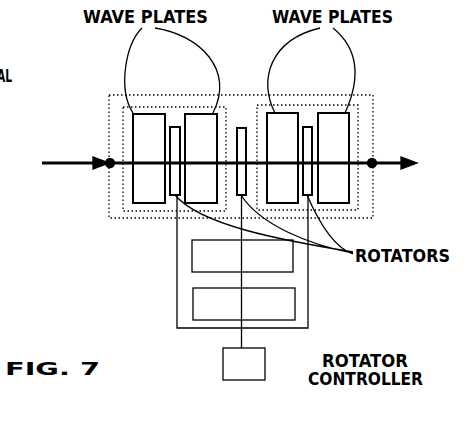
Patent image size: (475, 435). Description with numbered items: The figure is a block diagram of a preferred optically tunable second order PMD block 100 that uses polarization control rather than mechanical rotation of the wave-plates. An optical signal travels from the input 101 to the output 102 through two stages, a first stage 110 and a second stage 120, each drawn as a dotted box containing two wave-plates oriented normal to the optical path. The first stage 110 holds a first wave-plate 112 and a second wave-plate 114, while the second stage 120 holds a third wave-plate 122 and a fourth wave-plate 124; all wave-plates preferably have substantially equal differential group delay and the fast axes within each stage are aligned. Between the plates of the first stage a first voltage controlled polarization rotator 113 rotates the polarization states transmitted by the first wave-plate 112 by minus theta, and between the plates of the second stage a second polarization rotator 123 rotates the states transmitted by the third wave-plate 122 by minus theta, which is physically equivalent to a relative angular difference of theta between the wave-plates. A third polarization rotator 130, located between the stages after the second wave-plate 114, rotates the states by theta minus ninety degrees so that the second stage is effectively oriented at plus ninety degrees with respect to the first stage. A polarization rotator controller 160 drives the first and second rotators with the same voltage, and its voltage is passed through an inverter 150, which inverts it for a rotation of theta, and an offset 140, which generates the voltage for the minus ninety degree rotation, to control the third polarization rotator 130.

The tunable second order PMD block 100 is at (109, 214).
The input 101 is at (107, 166).
The output 102 is at (374, 166).
The first stage 110 is at (123, 125).
The first wave-plate 112 is at (143, 113).
The first voltage controlled polarization rotator 113 is at (175, 126).
The second wave-plate 114 is at (195, 113).
The second stage 120 is at (358, 122).
The third wave-plate 122 is at (282, 113).
The second polarization rotator 123 is at (307, 126).
The fourth wave-plate 124 is at (333, 113).
The third polarization rotator 130 is at (241, 127).
The offset 140 is at (192, 262).
The inverter 150 is at (193, 312).
The polarization rotator controller 160 is at (322, 360).